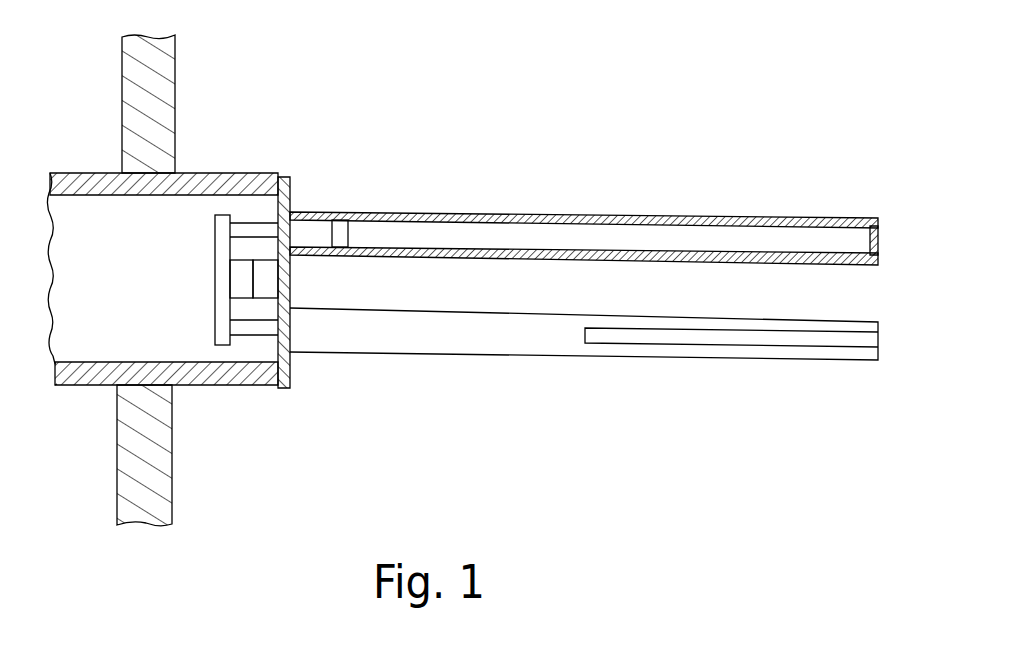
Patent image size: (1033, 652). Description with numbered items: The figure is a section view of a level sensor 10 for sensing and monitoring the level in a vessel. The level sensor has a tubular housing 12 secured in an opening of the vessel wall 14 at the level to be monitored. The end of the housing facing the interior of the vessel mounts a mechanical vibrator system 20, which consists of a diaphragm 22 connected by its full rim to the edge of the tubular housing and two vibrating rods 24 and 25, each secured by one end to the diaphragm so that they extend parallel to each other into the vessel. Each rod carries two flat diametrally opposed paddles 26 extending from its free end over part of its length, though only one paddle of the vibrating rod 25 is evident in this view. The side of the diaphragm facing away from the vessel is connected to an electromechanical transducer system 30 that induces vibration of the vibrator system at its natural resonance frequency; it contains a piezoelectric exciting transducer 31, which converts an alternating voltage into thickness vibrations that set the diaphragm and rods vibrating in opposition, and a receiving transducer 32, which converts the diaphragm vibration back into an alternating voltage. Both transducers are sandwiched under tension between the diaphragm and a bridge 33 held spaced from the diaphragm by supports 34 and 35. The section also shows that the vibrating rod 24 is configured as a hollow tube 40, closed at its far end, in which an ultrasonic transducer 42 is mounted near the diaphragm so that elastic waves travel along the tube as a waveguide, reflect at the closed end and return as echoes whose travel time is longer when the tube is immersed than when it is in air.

The level sensor 10 is at (678, 143).
The tubular housing 12 is at (193, 187).
The vessel wall 14 is at (155, 75).
The mechanical vibrator system 20 is at (538, 188).
The diaphragm 22 is at (287, 290).
The vibrating rod 24 is at (445, 212).
The vibrating rod 25 is at (453, 330).
The paddle 26 is at (812, 347).
The electromechanical transducer system 30 is at (174, 293).
The electromechanical exciting transducer 31 is at (265, 280).
The electromechanical receiving transducer 32 is at (242, 284).
The bridge 33 is at (223, 312).
The support 34 is at (258, 225).
The support 35 is at (258, 327).
The hollow tube 40 is at (390, 233).
The ultrasonic transducer 42 is at (342, 234).